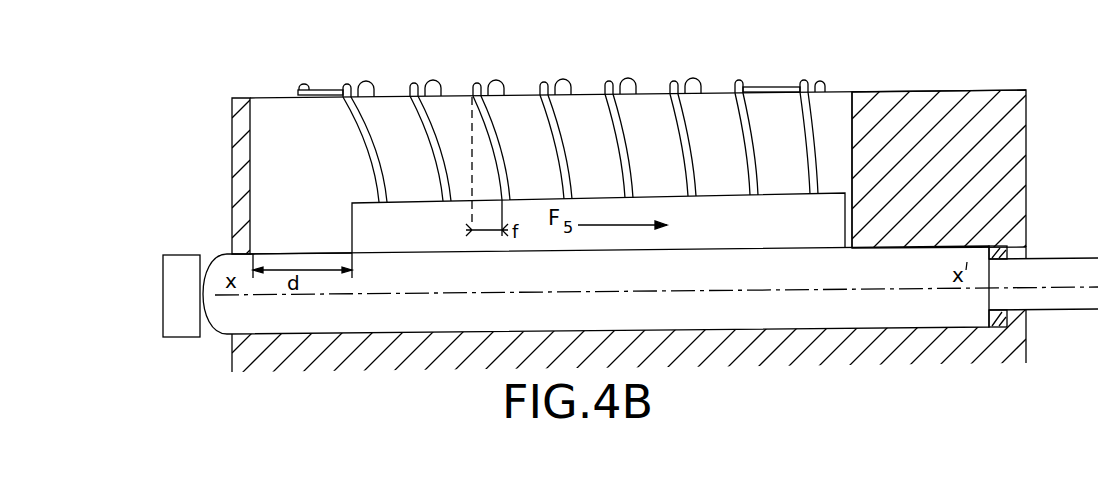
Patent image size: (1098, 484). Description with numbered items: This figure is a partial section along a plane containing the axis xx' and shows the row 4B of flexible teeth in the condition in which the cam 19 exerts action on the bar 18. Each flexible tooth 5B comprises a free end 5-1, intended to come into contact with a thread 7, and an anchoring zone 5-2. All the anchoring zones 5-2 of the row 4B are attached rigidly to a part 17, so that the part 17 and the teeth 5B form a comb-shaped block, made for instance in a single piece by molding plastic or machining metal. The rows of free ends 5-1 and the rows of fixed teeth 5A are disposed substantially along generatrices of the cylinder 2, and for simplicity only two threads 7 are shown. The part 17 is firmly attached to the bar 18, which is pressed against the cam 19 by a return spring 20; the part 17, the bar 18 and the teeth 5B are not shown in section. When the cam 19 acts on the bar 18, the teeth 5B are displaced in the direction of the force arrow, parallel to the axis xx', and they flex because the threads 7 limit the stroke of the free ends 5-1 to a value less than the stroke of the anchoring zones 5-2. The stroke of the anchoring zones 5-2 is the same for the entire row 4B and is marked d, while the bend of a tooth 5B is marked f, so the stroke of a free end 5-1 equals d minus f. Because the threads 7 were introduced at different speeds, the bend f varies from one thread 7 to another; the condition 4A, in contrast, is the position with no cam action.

The cylinder 2 is at (951, 90).
The thread 7 is at (331, 89).
The part 17 is at (361, 196).
The bar 18 is at (320, 252).
The cam 19 is at (186, 255).
The fixed teeth 4A is at (549, 87).
The row of flexible teeth 4B is at (568, 157).
The fixed teeth 5A is at (614, 87).
The flexible tooth 5B is at (507, 178).
The free end 5-1 is at (739, 85).
The anchoring zone 5-2 is at (760, 193).
The return spring 20 is at (1004, 325).